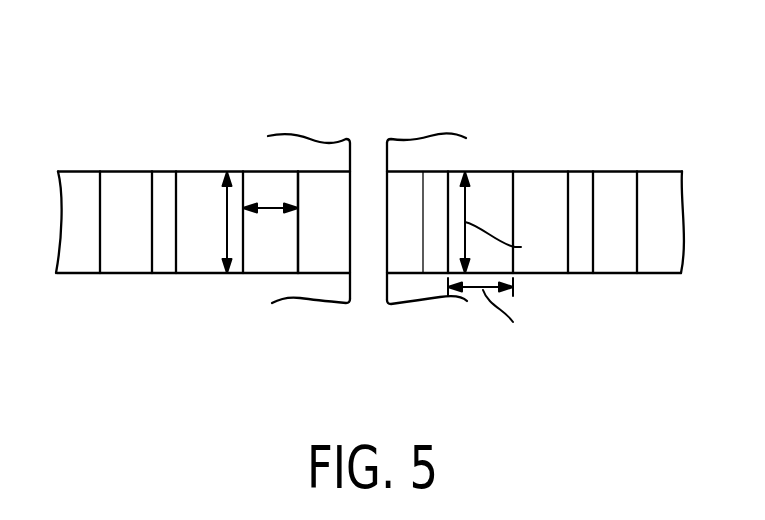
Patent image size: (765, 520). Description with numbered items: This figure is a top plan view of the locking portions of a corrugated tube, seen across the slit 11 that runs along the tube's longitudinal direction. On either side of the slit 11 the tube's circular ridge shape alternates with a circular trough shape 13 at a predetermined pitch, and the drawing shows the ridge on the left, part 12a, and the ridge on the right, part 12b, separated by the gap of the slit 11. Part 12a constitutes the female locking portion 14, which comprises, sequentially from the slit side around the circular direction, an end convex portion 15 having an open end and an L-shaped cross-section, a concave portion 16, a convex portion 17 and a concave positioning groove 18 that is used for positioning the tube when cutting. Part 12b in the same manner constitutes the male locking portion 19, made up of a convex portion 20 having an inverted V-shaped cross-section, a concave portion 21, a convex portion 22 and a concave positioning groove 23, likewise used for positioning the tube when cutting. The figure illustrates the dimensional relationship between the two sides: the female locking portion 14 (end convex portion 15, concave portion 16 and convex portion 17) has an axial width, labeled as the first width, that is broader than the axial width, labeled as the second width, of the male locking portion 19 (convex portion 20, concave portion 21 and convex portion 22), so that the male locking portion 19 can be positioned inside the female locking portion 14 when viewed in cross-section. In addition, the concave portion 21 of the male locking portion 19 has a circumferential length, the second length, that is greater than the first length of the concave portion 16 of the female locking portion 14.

The slit 11 is at (378, 258).
The part of the first zone 12a is at (159, 157).
The part constituting male locking portion 12b is at (490, 154).
The circular trough shape 13 is at (300, 153).
The female locking portion 14 is at (241, 89).
The end convex portion 15 is at (328, 188).
The concave portion 16 is at (273, 178).
The convex portion 17 is at (188, 176).
The concave positioning groove 18 is at (132, 176).
The male locking portion 19 is at (471, 97).
The convex portion 20 is at (442, 186).
The concave portion 21 is at (503, 182).
The convex portion 22 is at (553, 182).
The concave positioning groove 23 is at (606, 183).